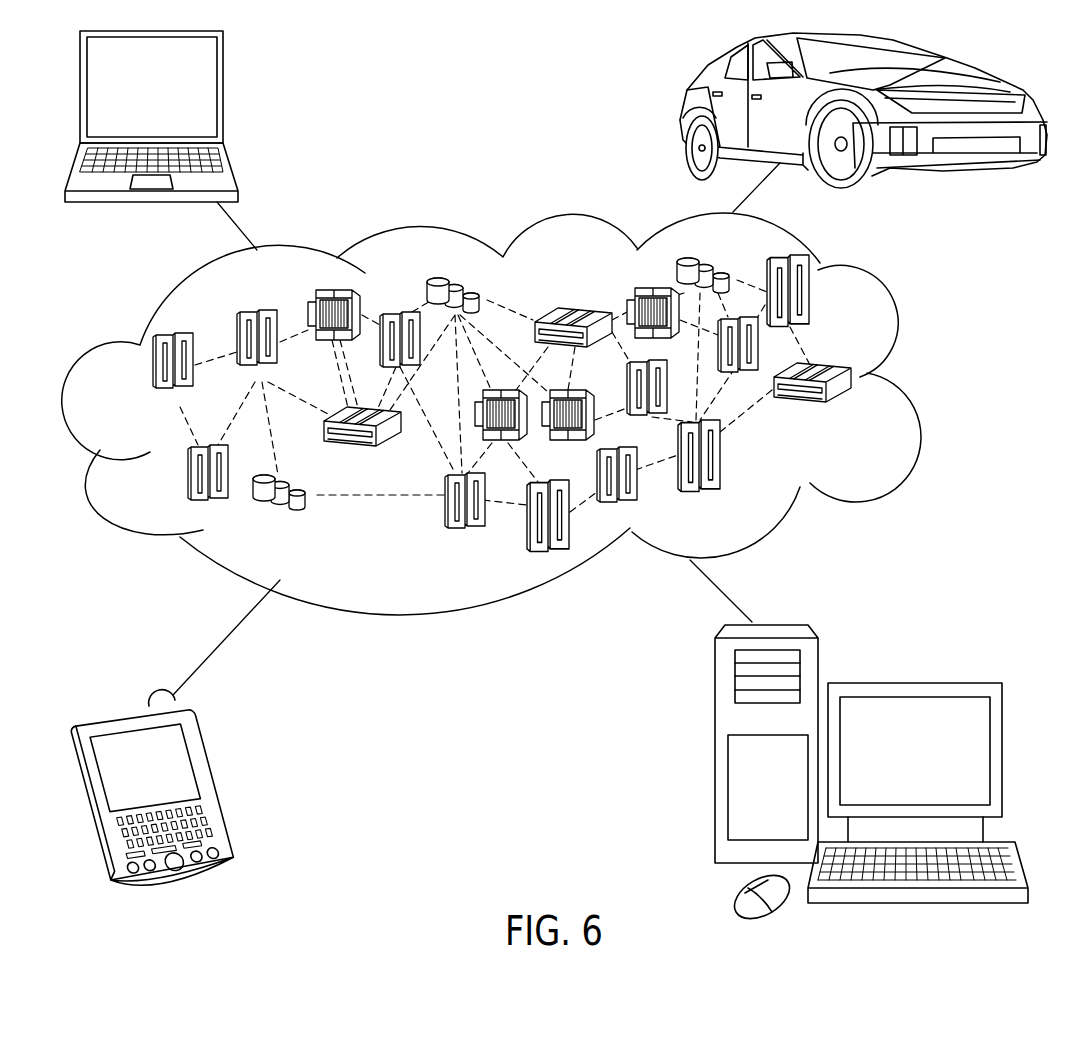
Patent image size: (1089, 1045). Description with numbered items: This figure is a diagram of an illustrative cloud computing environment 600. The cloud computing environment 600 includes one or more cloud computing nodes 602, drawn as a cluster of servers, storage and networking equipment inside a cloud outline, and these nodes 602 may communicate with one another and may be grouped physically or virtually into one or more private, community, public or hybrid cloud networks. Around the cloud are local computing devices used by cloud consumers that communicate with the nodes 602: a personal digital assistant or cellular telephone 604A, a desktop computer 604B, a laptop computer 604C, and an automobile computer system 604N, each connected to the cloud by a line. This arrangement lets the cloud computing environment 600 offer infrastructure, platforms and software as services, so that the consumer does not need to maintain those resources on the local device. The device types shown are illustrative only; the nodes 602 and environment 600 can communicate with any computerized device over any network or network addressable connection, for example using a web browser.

The cloud computing environment 600 is at (912, 382).
The cloud computing nodes 602 is at (862, 416).
The personal digital assistant or cellular telephone 604A is at (213, 783).
The desktop computer 604B is at (912, 683).
The laptop computer 604C is at (222, 93).
The automobile computer system 604N is at (683, 108).